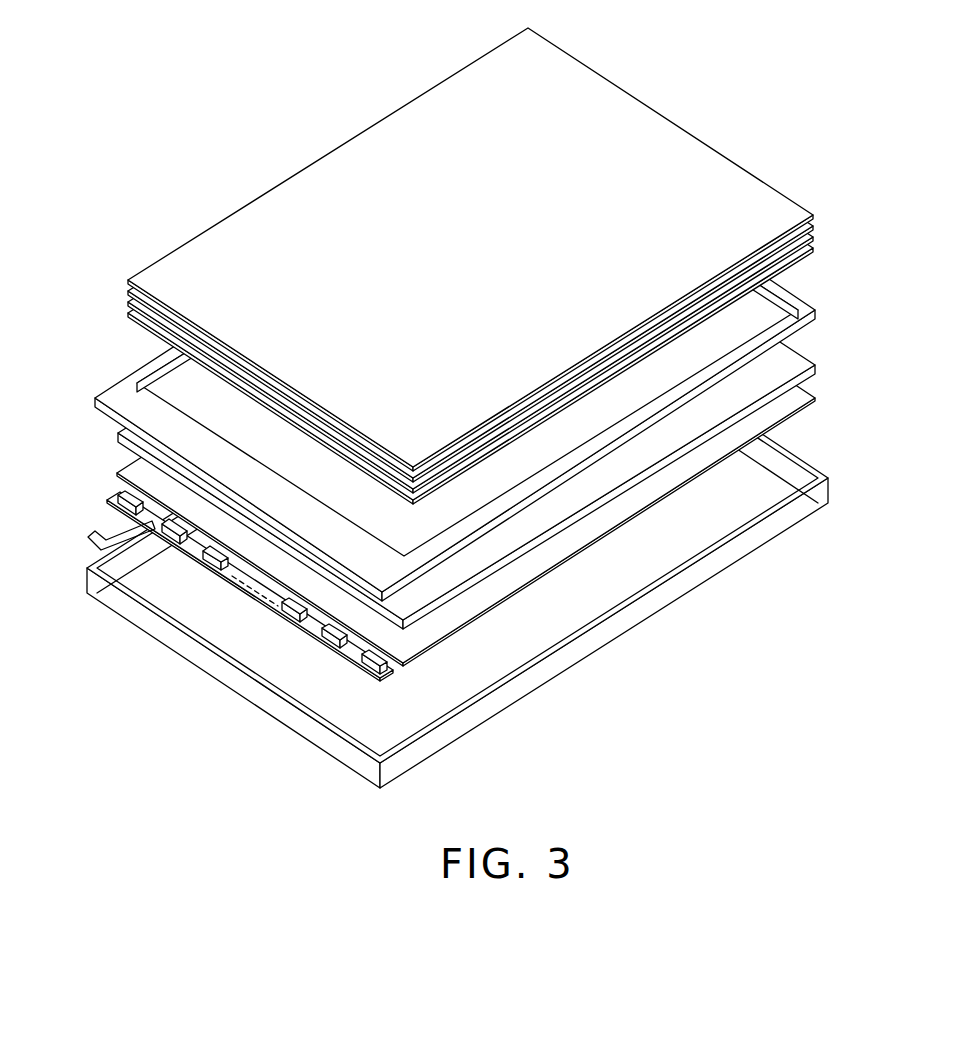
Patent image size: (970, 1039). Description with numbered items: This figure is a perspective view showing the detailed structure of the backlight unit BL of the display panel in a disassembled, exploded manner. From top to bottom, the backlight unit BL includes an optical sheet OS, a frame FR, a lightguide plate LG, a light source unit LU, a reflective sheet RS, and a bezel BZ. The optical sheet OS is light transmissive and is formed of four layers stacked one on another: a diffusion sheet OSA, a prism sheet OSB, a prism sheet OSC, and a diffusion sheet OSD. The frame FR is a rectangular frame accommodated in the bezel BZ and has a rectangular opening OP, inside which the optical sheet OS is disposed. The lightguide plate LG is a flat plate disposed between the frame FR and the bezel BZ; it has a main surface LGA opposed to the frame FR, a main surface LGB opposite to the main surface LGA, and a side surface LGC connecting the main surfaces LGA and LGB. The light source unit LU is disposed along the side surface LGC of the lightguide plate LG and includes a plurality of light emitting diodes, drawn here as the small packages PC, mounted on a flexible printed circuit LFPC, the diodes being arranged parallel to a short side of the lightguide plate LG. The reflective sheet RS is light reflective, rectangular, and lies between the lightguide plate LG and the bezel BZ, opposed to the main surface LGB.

The backlight unit BL is at (491, 409).
The bezel BZ is at (830, 480).
The light source unit LU is at (394, 680).
The flexible printed circuit LFPC is at (269, 606).
The light emitting element (LED package) PC is at (365, 661).
The reflective sheet RS is at (818, 400).
The lightguide plate LG is at (501, 425).
The main surface LGA is at (710, 404).
The main surface LGB is at (616, 505).
The side surface LGC is at (388, 622).
The frame FR is at (489, 358).
The opening OP is at (770, 311).
The optical sheet OS is at (540, 266).
The diffusion sheet OSA is at (805, 207).
The prism sheet OSB is at (814, 225).
The prism sheet OSC is at (814, 237).
The diffusion sheet OSD is at (814, 249).